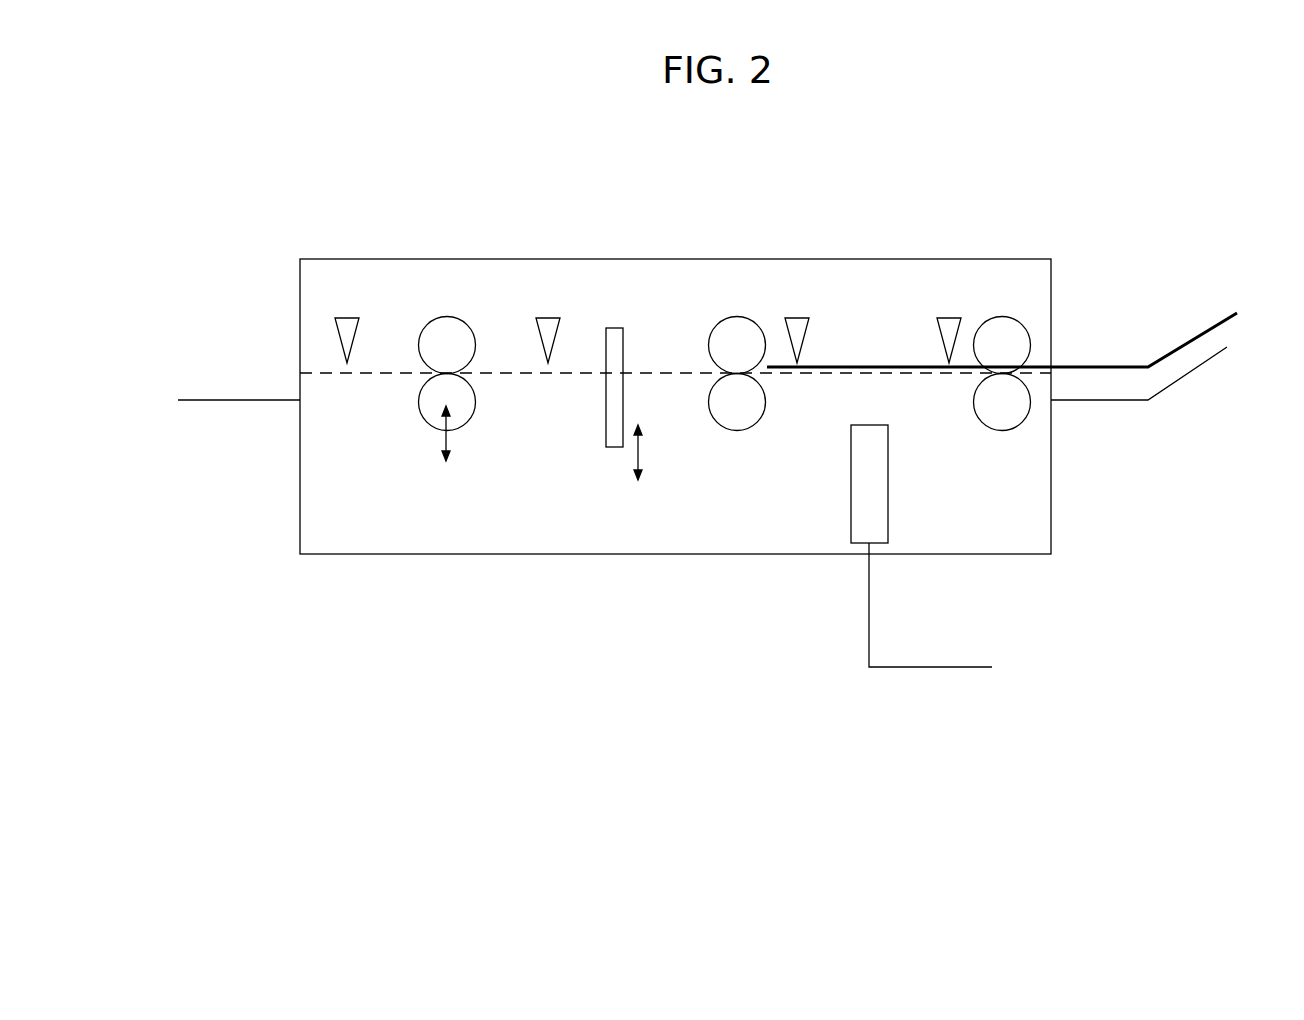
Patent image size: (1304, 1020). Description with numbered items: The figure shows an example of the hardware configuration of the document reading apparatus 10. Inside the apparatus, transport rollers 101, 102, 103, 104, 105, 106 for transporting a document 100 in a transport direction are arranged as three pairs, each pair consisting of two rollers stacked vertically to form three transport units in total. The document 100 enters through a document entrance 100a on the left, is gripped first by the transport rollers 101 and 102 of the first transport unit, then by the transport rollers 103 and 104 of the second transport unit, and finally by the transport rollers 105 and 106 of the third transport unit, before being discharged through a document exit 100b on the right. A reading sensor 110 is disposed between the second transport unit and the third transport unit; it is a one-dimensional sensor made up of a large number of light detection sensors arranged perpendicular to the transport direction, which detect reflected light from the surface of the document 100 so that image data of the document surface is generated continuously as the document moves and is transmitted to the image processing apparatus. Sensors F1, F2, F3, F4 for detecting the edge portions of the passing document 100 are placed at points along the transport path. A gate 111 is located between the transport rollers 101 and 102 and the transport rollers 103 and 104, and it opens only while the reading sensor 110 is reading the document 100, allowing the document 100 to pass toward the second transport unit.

The document reading apparatus 10 is at (1058, 167).
The document 100 is at (1195, 337).
The document entrance 100a is at (300, 373).
The document exit 100b is at (1053, 372).
The transport roller 101 is at (447, 316).
The transport roller 102 is at (427, 422).
The transport roller 103 is at (737, 316).
The transport roller 104 is at (737, 431).
The transport roller 105 is at (1002, 316).
The transport roller 106 is at (1001, 431).
The reading sensor 110 is at (851, 500).
The gate 111 is at (614, 328).
The sensor F1 is at (346, 325).
The sensor F2 is at (796, 325).
The sensor F3 is at (547, 325).
The sensor F4 is at (948, 325).